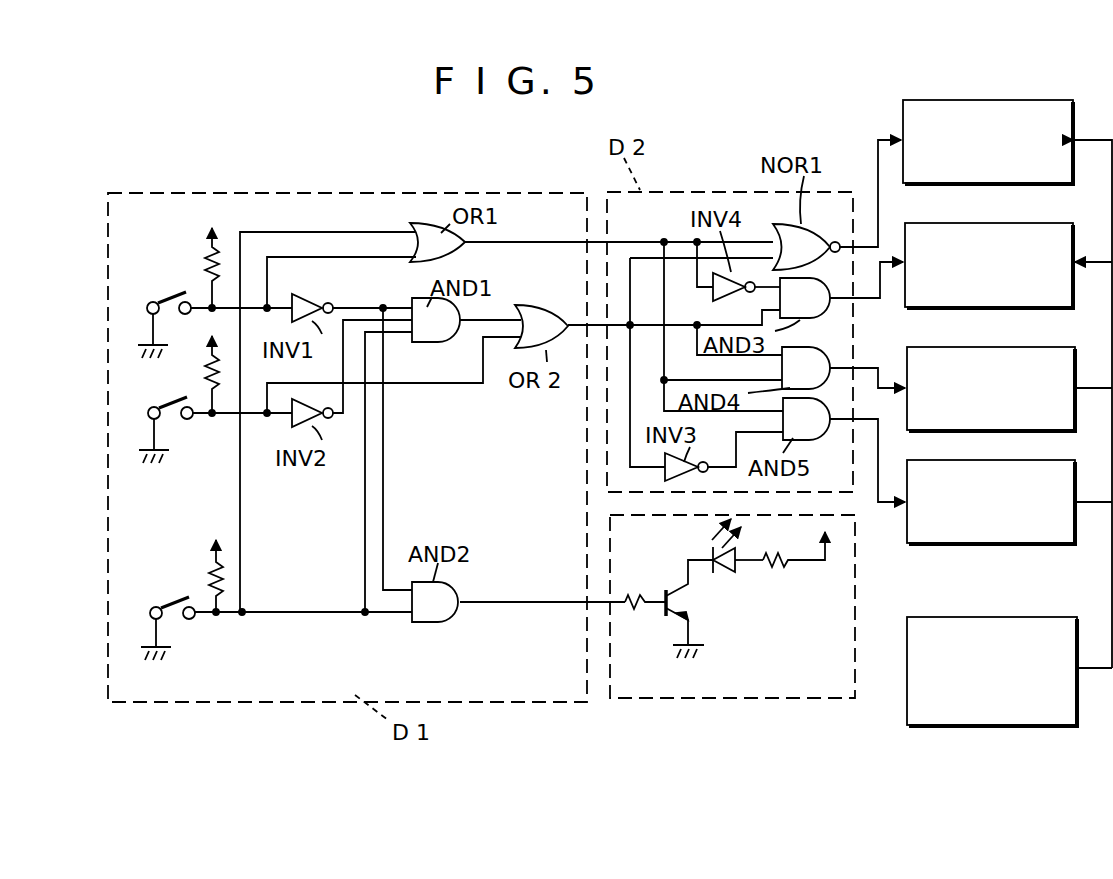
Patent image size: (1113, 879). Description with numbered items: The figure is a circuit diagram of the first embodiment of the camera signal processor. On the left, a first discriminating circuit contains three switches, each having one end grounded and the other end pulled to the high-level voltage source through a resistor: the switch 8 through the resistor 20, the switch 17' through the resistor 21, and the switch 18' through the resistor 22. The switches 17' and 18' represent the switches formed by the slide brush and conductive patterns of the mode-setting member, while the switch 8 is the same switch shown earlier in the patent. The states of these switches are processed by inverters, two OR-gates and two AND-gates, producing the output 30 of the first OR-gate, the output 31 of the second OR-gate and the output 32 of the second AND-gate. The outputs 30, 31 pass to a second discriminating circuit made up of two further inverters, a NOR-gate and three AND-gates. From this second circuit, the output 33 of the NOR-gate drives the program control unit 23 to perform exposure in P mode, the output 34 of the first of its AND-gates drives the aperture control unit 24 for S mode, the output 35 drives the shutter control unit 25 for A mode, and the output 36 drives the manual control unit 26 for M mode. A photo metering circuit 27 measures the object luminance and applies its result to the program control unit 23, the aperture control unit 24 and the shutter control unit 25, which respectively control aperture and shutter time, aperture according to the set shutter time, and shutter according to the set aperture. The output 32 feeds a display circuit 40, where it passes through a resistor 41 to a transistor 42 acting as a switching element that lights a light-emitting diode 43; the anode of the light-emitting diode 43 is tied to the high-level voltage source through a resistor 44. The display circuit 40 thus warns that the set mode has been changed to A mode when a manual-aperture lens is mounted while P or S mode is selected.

The switch 8 is at (165, 600).
The switch 17' is at (120, 315).
The switch 18' is at (121, 428).
The resistor 20 is at (208, 583).
The resistor 21 is at (205, 270).
The resistor 22 is at (205, 385).
The program control unit 23 is at (1040, 100).
The aperture control unit 24 is at (1044, 220).
The shutter control unit 25 is at (1044, 347).
The manual control unit 26 is at (1026, 468).
The photo metering circuit 27 is at (1018, 617).
The output of gate OR1 30 is at (600, 240).
The output of gate OR2 31 is at (600, 322).
The output of gate AND2 32 is at (600, 600).
The output of gate NOR1 33 is at (878, 140).
The output of gate AND3 34 is at (881, 262).
The output of gate AND4 35 is at (884, 388).
The output of gate AND5 36 is at (878, 510).
The display circuit 40 is at (755, 690).
The resistor 41 is at (640, 596).
The transistor 42 is at (676, 605).
The light-emitting diode 43 is at (727, 566).
The resistor 44 is at (782, 566).